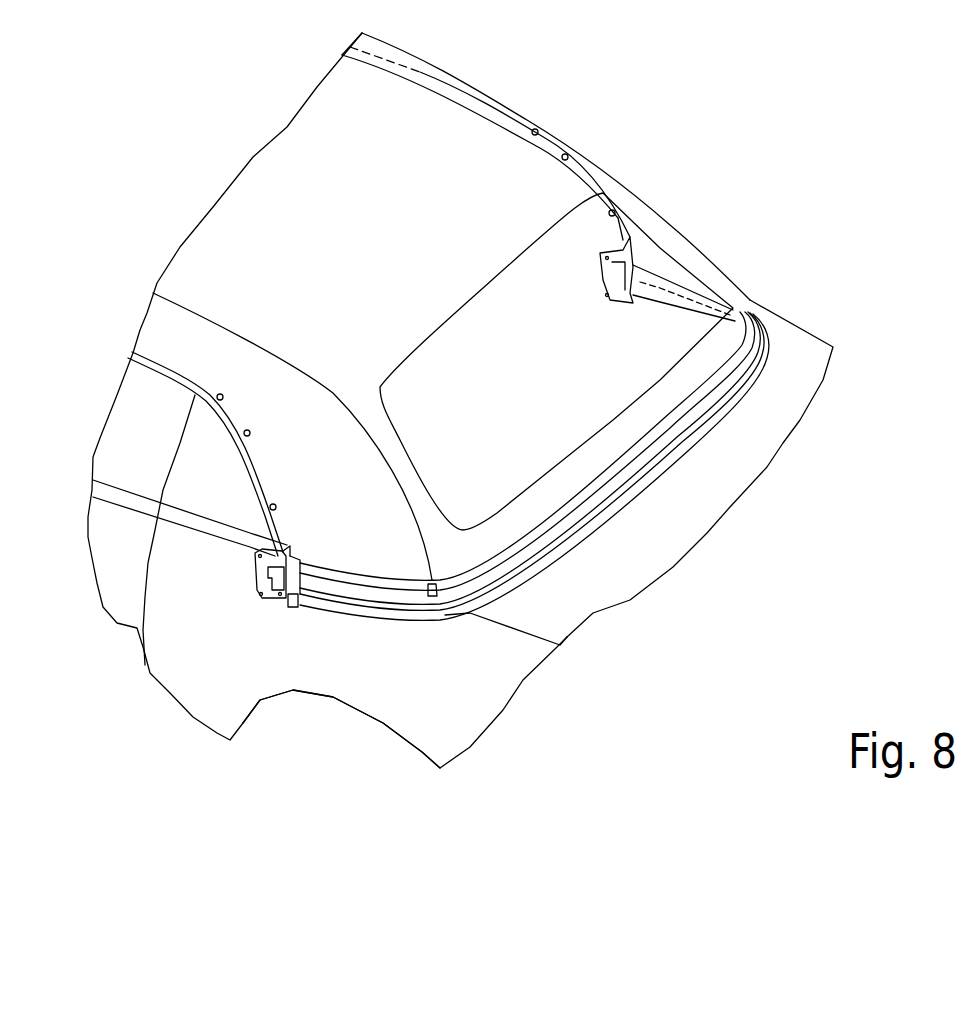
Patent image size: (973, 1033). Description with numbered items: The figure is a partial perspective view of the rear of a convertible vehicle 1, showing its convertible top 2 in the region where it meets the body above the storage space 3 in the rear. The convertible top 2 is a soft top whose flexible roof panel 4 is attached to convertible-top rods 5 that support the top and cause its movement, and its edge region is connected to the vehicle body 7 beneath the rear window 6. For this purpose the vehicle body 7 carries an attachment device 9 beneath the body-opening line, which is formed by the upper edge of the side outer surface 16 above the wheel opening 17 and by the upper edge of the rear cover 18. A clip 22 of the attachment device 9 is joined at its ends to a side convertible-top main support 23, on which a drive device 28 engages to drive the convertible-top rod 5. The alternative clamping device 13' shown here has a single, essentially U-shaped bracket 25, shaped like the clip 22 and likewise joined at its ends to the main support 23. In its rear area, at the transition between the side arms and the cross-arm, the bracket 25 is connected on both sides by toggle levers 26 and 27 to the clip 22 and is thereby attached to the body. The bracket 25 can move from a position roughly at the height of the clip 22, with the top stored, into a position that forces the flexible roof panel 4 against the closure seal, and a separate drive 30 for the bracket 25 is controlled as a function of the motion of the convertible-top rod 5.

The convertible vehicle 1 is at (121, 288).
The convertible top 2 is at (291, 145).
The storage space 3 is at (631, 646).
The flexible roof panel 4 is at (317, 87).
The convertible-top rod 5 is at (471, 95).
The rear window 6 is at (583, 228).
The vehicle body 7 is at (580, 598).
The attachment device 9 is at (494, 616).
The clamping device 13' is at (527, 609).
The side outer surface 16 is at (292, 662).
The wheel opening 17 is at (422, 752).
The rear cover 18 is at (699, 477).
The clip 22 is at (540, 565).
The convertible-top main support 23 is at (267, 560).
The bracket 25 is at (653, 439).
The toggle lever 26 is at (432, 590).
The toggle lever 27 is at (733, 312).
The drive device 28 is at (263, 487).
The separate drive 30 is at (303, 568).